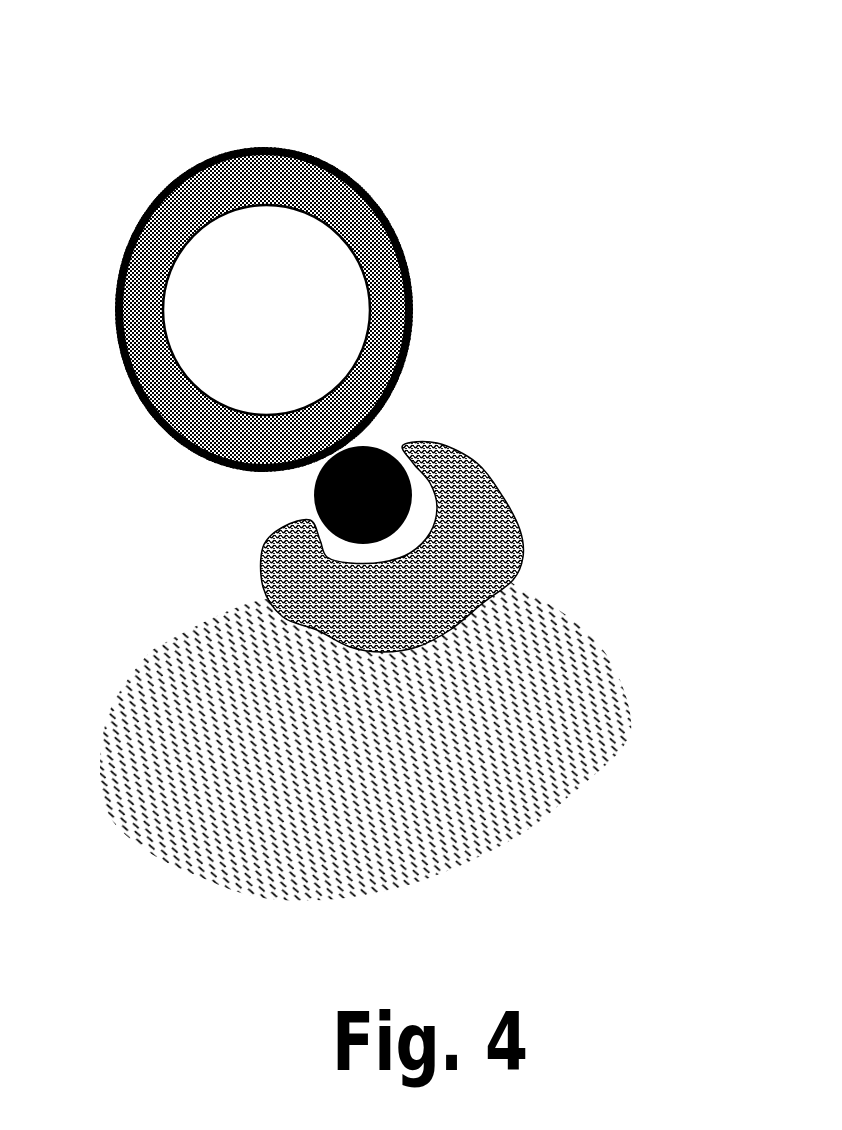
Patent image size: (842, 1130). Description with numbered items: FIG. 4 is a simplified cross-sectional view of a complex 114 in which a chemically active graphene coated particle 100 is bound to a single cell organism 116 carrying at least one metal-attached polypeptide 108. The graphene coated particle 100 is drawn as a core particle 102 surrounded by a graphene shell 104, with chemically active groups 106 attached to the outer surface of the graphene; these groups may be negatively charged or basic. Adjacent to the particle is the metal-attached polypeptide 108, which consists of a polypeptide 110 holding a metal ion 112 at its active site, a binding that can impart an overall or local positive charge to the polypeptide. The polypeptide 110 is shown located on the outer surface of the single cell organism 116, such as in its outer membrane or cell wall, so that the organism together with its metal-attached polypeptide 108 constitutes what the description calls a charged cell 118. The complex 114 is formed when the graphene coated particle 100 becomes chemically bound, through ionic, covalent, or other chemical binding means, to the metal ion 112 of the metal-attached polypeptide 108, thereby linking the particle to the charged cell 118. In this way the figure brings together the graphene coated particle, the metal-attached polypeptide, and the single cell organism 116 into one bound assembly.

The chemically active graphene coated particle 100 is at (393, 135).
The core particle 102 is at (197, 290).
The graphene shell 104 is at (202, 167).
The chemically active groups 106 is at (115, 297).
The metal-attached polypeptide 108 is at (138, 485).
The polypeptide 110 is at (483, 522).
The metal ion 112 is at (318, 490).
The complex 114 is at (573, 17).
The single cell organism 116 is at (200, 822).
The charged cell 118 is at (665, 768).